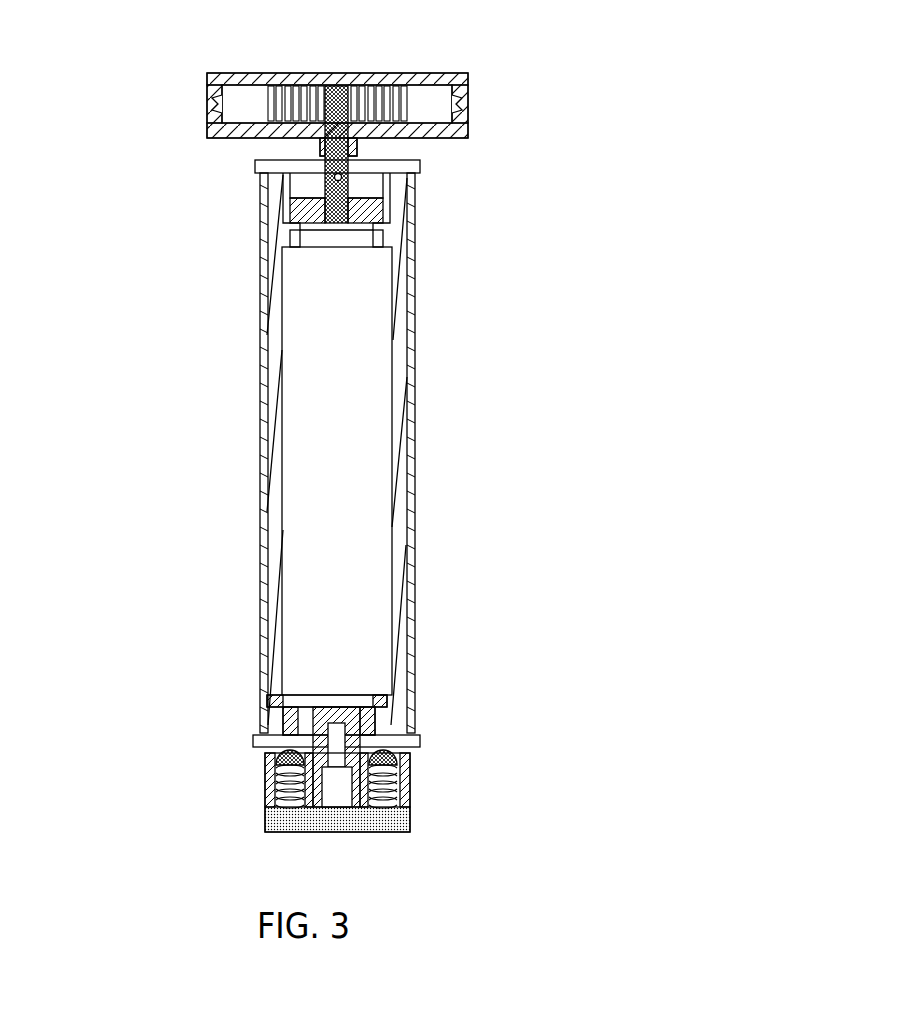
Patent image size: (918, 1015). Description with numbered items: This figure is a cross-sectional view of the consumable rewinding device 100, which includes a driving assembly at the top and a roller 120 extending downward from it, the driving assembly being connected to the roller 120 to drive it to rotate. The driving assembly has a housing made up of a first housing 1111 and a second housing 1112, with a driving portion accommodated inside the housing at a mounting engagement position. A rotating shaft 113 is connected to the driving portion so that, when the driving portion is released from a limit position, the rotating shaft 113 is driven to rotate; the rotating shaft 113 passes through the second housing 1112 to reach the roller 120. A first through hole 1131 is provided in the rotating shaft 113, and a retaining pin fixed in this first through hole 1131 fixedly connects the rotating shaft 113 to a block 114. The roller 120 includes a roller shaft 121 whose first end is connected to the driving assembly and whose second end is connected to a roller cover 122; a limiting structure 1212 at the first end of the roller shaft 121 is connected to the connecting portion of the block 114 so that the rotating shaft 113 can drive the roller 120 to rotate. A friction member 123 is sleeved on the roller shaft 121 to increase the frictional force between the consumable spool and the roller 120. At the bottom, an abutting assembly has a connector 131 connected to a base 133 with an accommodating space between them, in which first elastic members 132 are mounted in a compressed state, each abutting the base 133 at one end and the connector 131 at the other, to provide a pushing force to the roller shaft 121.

The consumable rewinding device 100 is at (88, 48).
The first housing 1111 is at (433, 71).
The second housing 1112 is at (455, 117).
The rotating shaft 113 is at (320, 149).
The first through hole 1131 is at (342, 178).
The block 114 is at (285, 226).
The limiting structure 1212 is at (292, 238).
The roller shaft 121 is at (367, 375).
The roller 120 is at (419, 446).
The friction member 123 is at (417, 582).
The roller cover 122 is at (402, 717).
The connector 131 is at (282, 723).
The base 133 is at (265, 825).
The first elastic members 132 is at (396, 787).